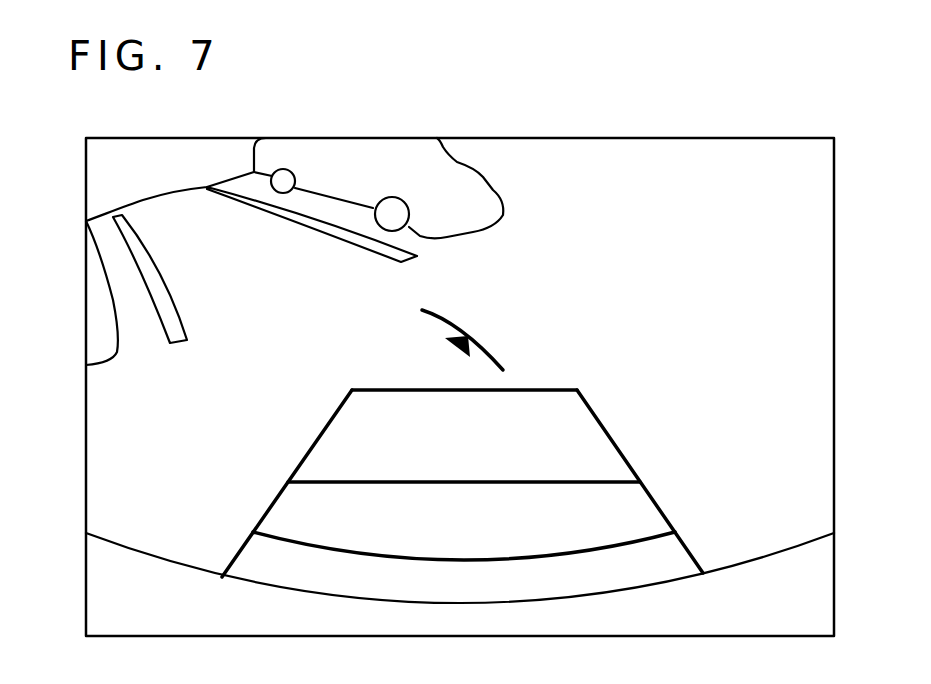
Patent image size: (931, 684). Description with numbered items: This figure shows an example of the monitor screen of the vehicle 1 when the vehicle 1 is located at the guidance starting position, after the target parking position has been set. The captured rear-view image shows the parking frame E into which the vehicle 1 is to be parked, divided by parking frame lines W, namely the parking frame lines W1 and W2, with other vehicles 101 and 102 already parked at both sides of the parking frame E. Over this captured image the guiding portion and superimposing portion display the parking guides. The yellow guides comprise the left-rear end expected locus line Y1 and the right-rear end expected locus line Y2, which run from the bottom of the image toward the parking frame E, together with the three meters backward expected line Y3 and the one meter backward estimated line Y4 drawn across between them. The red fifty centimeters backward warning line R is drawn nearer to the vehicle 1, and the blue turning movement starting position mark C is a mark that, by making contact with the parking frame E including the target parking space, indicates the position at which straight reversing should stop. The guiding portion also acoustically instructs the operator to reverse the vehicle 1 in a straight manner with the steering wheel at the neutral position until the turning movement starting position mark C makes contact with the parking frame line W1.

The vehicle 1 is at (585, 623).
The parking frame E is at (181, 204).
The other vehicle 101 is at (480, 183).
The other vehicle 102 is at (98, 315).
The parking frame lines W is at (265, 265).
The parking frame line W1 is at (388, 248).
The parking frame line W2 is at (175, 317).
The turning movement starting position mark C is at (449, 308).
The left-rear end expected locus line Y1 is at (620, 440).
The right-rear end expected locus line Y2 is at (298, 462).
The 3 meters backward expected line Y3 is at (540, 388).
The 1 meter backward estimated line Y4 is at (425, 480).
The 50 centimeters backward warning line R is at (472, 555).